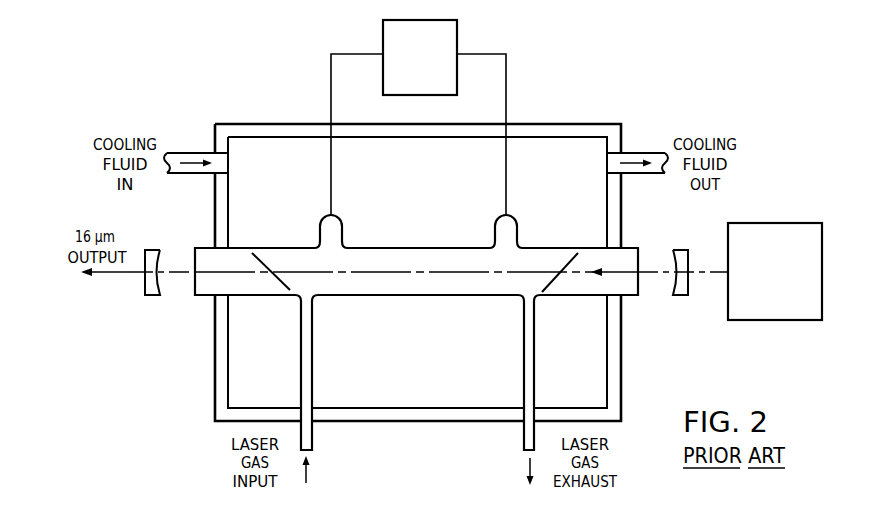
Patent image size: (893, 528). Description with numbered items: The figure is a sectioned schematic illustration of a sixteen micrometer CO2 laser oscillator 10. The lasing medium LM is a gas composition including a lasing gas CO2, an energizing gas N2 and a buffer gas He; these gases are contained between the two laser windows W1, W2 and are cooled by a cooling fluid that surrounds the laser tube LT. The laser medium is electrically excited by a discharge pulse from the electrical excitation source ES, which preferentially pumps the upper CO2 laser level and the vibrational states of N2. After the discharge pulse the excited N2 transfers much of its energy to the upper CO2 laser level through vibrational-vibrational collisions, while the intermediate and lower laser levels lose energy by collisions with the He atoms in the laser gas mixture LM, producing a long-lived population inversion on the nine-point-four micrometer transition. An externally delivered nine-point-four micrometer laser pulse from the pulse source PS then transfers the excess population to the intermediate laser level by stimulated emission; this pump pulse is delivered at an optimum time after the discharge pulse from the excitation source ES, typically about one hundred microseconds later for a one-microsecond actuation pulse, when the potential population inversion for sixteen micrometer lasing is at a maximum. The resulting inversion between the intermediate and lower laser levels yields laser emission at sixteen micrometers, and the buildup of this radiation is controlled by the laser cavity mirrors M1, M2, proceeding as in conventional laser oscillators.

The oscillator 10 is at (427, 349).
The laser tube LT is at (352, 297).
The lasing medium LM is at (497, 288).
The laser window W1 is at (560, 285).
The laser window W2 is at (285, 287).
The laser cavity mirror M1 is at (679, 296).
The laser cavity mirror M2 is at (150, 296).
The electrical excitation source ES is at (458, 37).
The pulse source PS is at (772, 320).